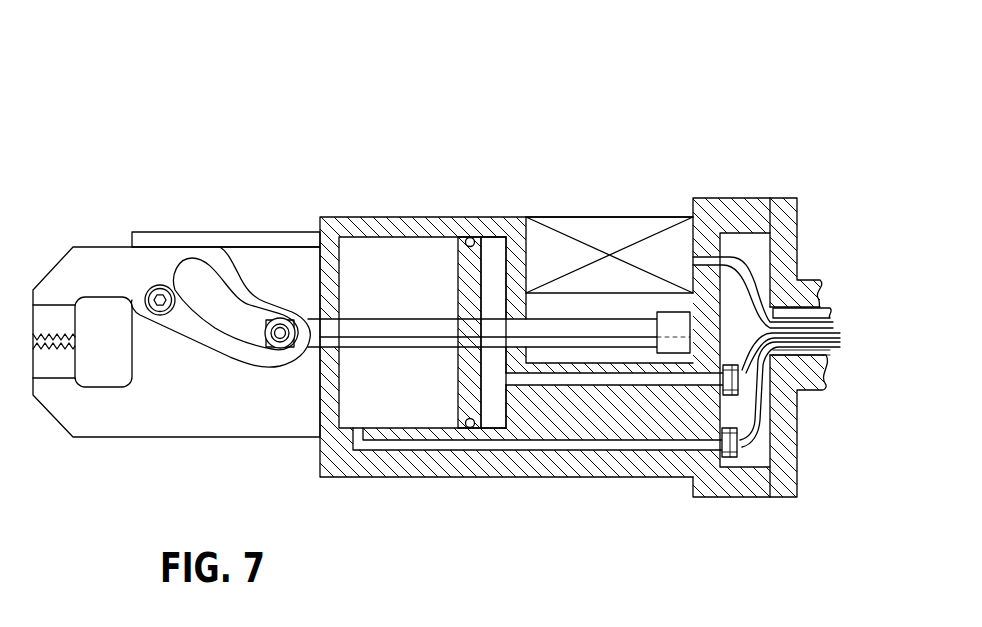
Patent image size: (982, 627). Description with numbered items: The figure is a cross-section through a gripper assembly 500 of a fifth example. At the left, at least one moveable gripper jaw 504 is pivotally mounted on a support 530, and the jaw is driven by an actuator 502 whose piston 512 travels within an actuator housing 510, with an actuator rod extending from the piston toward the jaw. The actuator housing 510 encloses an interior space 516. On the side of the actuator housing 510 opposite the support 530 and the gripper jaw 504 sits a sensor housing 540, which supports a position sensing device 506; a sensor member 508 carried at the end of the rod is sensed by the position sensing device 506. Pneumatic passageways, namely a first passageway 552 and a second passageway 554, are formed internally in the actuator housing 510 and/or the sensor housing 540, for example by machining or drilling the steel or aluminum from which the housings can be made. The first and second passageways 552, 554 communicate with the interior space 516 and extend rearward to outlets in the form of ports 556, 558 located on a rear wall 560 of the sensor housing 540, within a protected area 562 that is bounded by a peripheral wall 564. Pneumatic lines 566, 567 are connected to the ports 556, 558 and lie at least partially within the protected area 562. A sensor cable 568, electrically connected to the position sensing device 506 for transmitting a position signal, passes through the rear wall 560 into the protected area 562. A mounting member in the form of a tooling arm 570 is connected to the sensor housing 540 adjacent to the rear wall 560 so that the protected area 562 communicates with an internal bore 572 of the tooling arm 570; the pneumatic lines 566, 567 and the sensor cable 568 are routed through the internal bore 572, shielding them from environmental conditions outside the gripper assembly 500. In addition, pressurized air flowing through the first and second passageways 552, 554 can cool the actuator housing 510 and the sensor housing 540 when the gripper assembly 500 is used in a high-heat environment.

The gripper assembly 500 is at (145, 158).
The actuator 502 is at (423, 135).
The moveable gripper jaw 504 is at (73, 247).
The position sensing device 506 is at (610, 215).
The sensor member 508 is at (667, 320).
The actuator housing 510 is at (485, 215).
The piston 512 is at (457, 407).
The interior space 516 is at (401, 285).
The support 530 is at (267, 230).
The sensor housing 540 is at (635, 482).
The first passageway 552 is at (560, 447).
The second passageway 554 is at (623, 380).
The port 556 is at (737, 460).
The port 558 is at (732, 365).
The rear wall 560 is at (720, 415).
The protected area 562 is at (757, 207).
The peripheral wall 564 is at (717, 207).
The pneumatic line 566 is at (826, 350).
The pneumatic line 567 is at (833, 342).
The sensor cable 568 is at (833, 317).
The tooling arm 570 is at (830, 280).
The internal bore 572 is at (793, 357).